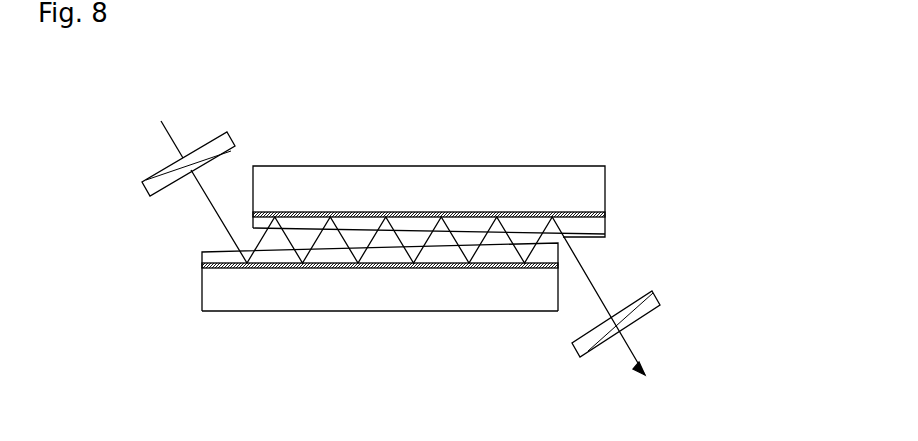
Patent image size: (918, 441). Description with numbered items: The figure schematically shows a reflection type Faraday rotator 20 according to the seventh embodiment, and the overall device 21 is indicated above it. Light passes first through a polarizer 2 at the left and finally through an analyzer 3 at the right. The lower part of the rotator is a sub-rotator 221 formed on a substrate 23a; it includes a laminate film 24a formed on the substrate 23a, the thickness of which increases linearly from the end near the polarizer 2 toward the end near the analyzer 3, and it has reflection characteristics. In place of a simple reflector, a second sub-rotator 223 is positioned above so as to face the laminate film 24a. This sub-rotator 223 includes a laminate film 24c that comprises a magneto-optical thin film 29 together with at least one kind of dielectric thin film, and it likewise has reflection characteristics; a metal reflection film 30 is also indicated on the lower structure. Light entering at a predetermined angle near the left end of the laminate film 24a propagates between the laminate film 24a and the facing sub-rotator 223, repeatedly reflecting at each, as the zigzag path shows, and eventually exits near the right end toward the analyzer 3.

The polarizer 2 is at (125, 173).
The analyzer 3 is at (682, 318).
The reflection type Faraday rotator 20 is at (555, 118).
The light modulating element 21 is at (638, 130).
The substrate 23a is at (218, 292).
The laminate film 24a is at (357, 302).
The laminate film 24c is at (462, 166).
The magneto-optical thin film 29 is at (253, 213).
The metal reflection film 30 is at (558, 266).
The sub-rotator 221 is at (273, 313).
The sub-rotator 223 is at (443, 157).